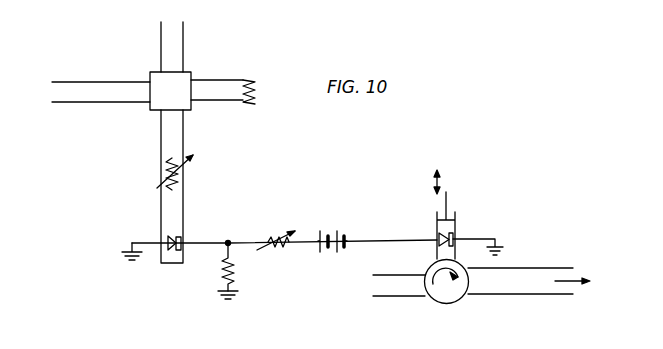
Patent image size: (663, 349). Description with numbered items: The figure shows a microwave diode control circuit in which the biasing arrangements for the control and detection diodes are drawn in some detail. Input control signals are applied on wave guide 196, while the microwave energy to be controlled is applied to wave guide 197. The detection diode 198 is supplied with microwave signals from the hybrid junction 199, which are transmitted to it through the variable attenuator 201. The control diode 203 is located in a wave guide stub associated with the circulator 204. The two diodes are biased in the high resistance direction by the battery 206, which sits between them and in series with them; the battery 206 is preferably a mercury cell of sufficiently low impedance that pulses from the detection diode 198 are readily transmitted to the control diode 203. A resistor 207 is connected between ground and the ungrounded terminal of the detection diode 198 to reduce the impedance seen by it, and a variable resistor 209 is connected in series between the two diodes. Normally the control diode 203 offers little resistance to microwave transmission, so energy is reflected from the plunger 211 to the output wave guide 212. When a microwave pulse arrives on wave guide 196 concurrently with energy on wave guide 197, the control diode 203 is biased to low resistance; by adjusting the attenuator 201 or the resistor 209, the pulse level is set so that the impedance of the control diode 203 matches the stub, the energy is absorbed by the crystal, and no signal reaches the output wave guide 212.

The wave guide 196 is at (84, 82).
The hybrid junction 199 is at (183, 80).
The variable attenuator 201 is at (165, 172).
The detection diode 198 is at (182, 240).
The resistor 207 is at (237, 270).
The variable resistor 209 is at (271, 237).
The battery 206 is at (331, 237).
The plunger 211 is at (449, 218).
The control diode 203 is at (453, 236).
The circulator 204 is at (450, 295).
The wave guide 197 is at (396, 286).
The output wave guide 212 is at (522, 286).